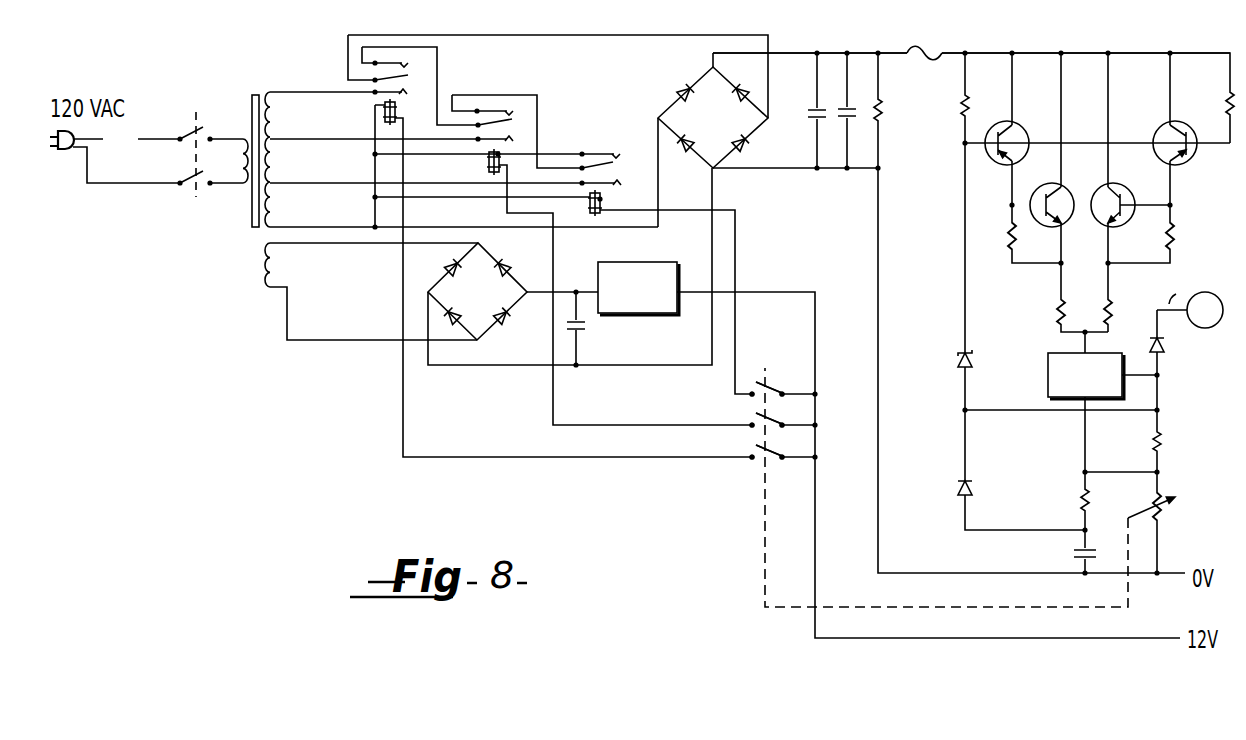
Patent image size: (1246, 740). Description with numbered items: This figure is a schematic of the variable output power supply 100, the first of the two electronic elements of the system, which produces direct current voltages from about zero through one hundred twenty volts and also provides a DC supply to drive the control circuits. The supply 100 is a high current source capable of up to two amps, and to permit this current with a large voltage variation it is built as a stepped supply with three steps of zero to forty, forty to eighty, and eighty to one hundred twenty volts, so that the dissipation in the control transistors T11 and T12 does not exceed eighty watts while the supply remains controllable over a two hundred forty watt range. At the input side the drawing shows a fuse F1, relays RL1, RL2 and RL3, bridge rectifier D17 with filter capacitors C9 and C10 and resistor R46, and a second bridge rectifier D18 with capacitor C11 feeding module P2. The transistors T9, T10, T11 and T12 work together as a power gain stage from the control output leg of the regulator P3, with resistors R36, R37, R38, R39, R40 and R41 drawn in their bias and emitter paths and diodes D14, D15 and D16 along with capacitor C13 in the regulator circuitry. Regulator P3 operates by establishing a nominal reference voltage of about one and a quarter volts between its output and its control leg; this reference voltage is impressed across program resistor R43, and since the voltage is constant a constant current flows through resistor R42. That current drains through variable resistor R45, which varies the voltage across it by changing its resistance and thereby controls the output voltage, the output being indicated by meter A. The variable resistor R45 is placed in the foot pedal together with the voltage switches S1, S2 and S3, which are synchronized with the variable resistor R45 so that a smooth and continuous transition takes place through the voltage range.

The power supply 100 is at (1002, 45).
The relay 1 RL1 is at (403, 94).
The relay 2 RL2 is at (482, 146).
The relay 3 RL3 is at (612, 185).
The bridge rectifier D17 is at (713, 117).
The bridge rectifier D18 is at (477, 291).
The capacitor C9 is at (806, 131).
The capacitor C10 is at (835, 159).
The capacitor C11 is at (591, 339).
The capacitor C13 is at (1063, 557).
The resistor R46 is at (898, 111).
The fuse F1 is at (924, 41).
The power supply module P2 is at (638, 288).
The regulator P3 is at (1086, 376).
The voltage switch S1 is at (750, 465).
The voltage switch S2 is at (750, 435).
The voltage switch S3 is at (773, 376).
The resistor R36 is at (984, 105).
The resistor R37 is at (1212, 103).
The resistor R38 is at (994, 238).
The resistor R39 is at (1190, 238).
The resistor R40 is at (1038, 312).
The resistor R41 is at (1124, 312).
The resistor R42 is at (1061, 500).
The program resistor R43 is at (1179, 443).
The variable resistor R45 is at (1168, 511).
The transistor T9 is at (1016, 134).
The transistor T10 is at (1163, 134).
The control transistor T11 is at (1060, 220).
The control transistor T12 is at (1121, 220).
The zener diode D14 is at (985, 367).
The diode D15 is at (941, 494).
The diode D16 is at (1175, 344).
The ammeter (0-120 V) A is at (1190, 298).